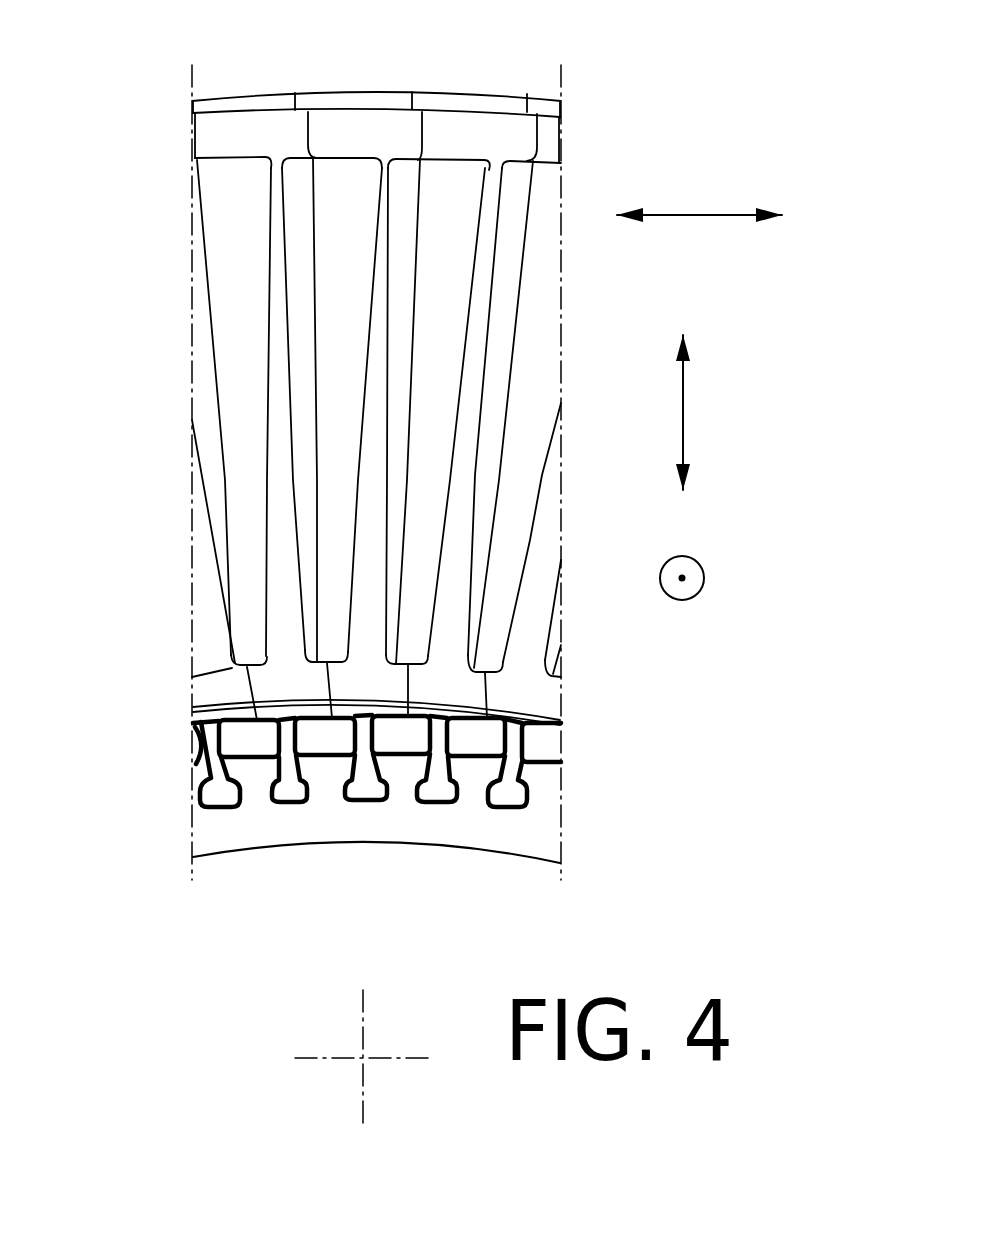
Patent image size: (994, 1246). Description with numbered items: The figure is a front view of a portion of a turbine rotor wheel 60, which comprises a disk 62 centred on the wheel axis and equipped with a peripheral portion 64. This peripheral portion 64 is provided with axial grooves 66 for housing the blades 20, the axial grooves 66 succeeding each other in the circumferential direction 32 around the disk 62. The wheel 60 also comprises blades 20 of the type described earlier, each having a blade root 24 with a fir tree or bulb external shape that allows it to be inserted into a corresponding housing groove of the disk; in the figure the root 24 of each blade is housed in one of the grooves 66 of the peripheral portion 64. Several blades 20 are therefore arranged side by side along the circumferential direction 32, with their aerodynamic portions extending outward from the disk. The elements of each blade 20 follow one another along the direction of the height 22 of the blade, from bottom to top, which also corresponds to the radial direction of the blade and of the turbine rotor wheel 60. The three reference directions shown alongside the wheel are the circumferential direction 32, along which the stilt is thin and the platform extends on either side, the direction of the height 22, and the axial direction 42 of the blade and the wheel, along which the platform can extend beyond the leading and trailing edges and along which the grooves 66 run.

The turbine rotor wheel 60 is at (627, 103).
The blade 20 is at (333, 237).
The circumferential direction 32 is at (687, 212).
The direction of the height 22 is at (683, 413).
The axial direction 42 is at (684, 576).
The peripheral portion 64 is at (362, 823).
The axial grooves 66 is at (227, 792).
The blade root 24 is at (435, 788).
The disk 62 is at (218, 860).